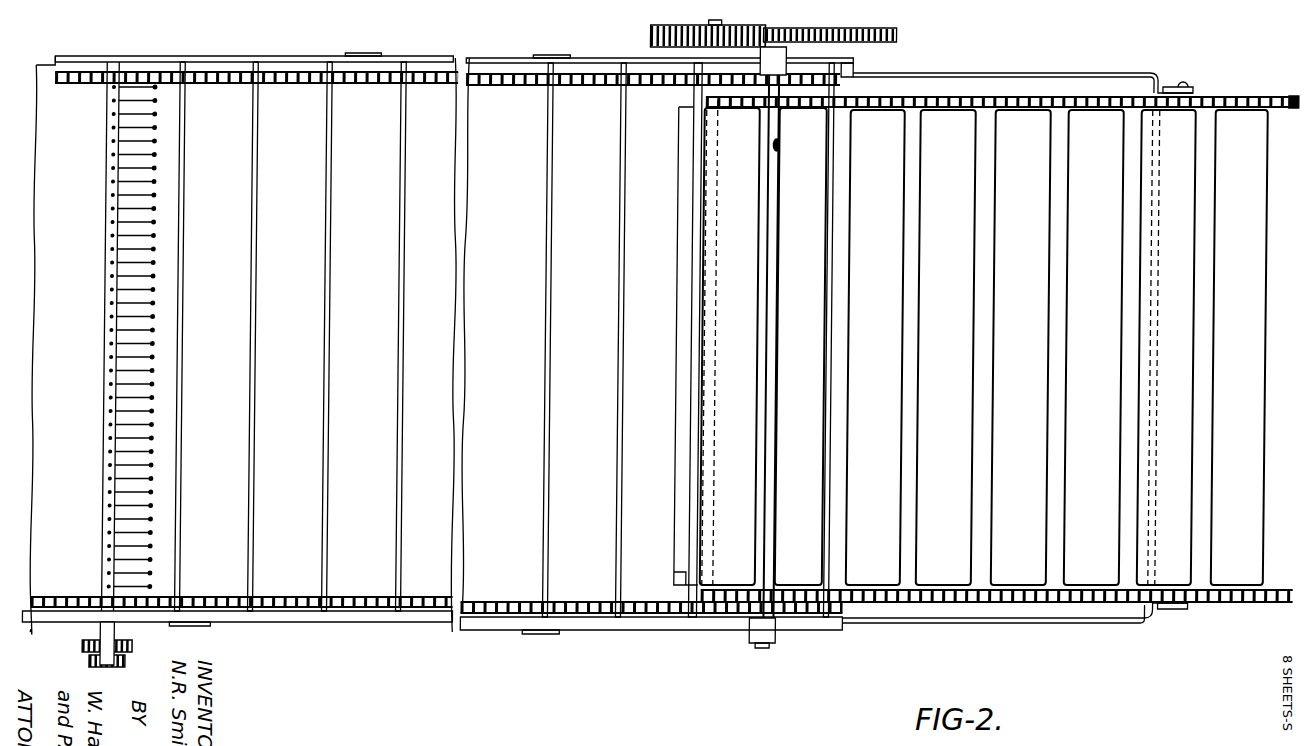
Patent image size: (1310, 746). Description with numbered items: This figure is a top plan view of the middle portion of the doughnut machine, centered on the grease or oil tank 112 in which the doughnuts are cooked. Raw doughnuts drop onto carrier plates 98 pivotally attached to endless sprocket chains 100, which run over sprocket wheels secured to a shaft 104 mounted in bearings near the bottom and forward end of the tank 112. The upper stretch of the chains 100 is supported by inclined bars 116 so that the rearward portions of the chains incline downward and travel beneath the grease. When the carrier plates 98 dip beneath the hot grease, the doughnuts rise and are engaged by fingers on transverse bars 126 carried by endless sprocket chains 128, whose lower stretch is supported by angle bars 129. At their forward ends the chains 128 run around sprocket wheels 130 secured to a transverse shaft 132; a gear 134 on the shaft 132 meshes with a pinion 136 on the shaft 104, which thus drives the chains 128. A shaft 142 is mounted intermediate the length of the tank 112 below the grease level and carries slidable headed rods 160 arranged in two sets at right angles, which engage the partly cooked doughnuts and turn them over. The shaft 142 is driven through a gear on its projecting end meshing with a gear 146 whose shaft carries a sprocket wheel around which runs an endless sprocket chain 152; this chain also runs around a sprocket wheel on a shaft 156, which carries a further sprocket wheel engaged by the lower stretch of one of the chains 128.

The carrier plates 98 is at (1022, 575).
The endless sprocket chains 100 is at (1043, 97).
The shaft 104 is at (700, 60).
The grease or oil tank 112 is at (1127, 73).
The inclined bars 116 is at (1289, 108).
The transverse bars 126 is at (402, 553).
The endless sprocket chains 128 is at (289, 73).
The angle bars 129 is at (425, 58).
The sprocket wheels 130 is at (783, 632).
The transverse shaft 132 is at (765, 648).
The gear 134 is at (890, 36).
The pinion 136 is at (672, 25).
The shaft 142 is at (110, 551).
The gear 146 is at (88, 646).
The endless sprocket chain 152 is at (131, 660).
The shaft 156 is at (119, 633).
The slidable headed rods 160 is at (153, 410).